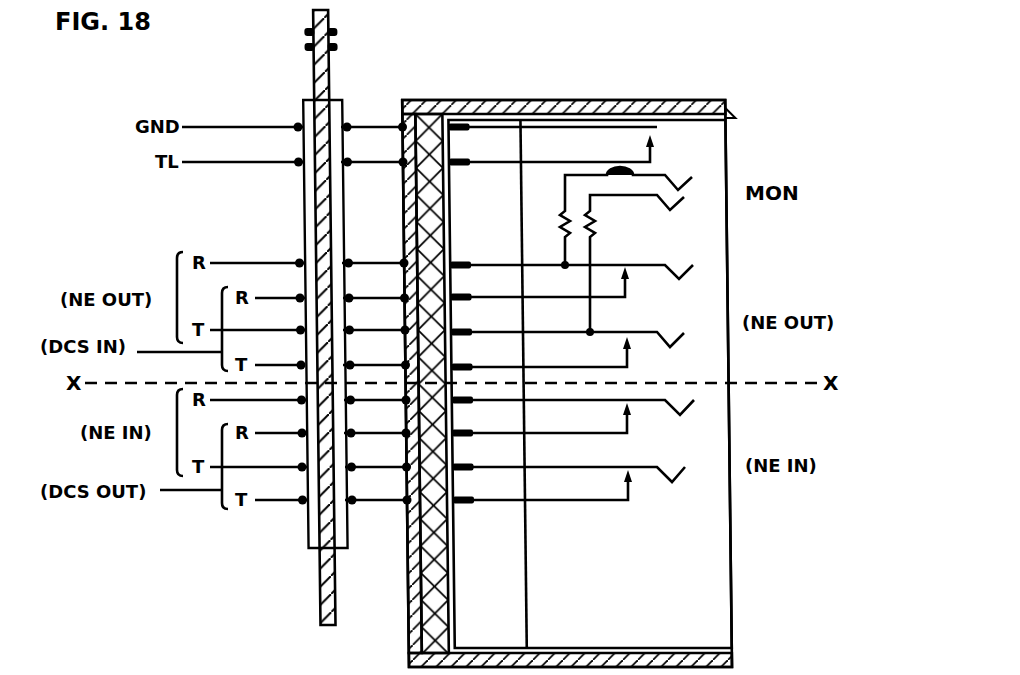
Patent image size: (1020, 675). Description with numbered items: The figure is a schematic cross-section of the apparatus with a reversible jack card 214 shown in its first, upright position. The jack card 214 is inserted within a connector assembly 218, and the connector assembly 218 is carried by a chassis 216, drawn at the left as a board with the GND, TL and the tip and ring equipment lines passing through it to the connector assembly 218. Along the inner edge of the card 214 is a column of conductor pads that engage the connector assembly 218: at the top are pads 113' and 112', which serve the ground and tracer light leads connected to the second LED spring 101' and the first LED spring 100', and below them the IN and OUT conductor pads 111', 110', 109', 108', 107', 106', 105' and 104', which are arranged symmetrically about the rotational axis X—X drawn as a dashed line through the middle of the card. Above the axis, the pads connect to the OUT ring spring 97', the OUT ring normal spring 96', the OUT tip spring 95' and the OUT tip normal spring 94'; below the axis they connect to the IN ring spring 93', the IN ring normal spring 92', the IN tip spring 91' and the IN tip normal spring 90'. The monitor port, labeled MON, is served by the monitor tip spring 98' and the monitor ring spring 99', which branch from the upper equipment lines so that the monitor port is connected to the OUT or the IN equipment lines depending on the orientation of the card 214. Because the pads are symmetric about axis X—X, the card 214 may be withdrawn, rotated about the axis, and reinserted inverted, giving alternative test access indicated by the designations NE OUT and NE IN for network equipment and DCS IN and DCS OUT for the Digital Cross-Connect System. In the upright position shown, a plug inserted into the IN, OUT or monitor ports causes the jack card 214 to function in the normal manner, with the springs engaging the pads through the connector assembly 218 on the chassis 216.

The reversible jack card 214 is at (708, 606).
The chassis 216 is at (322, 586).
The connector assembly 218 is at (423, 630).
The conductor pad 113' is at (482, 139).
The conductor pad 112' is at (482, 175).
The conductor pad 111' is at (482, 253).
The conductor pad 110' is at (485, 286).
The conductor pad 109' is at (484, 320).
The conductor pad 108' is at (485, 355).
The conductor pad 107' is at (485, 413).
The conductor pad 106' is at (485, 446).
The conductor pad 105' is at (486, 479).
The conductor pad 104' is at (485, 513).
The second LED spring 101' is at (562, 140).
The first LED spring 100' is at (591, 148).
The monitor ring spring 99' is at (608, 218).
The monitor tip spring 98' is at (634, 265).
The OUT ring spring 97' is at (580, 281).
The OUT ring normal spring 96' is at (548, 282).
The OUT tip spring 95' is at (576, 326).
The OUT tip normal spring 94' is at (549, 352).
The IN ring spring 93' is at (581, 423).
The IN ring normal spring 92' is at (549, 418).
The IN tip spring 91' is at (576, 461).
The IN tip normal spring 90' is at (550, 485).